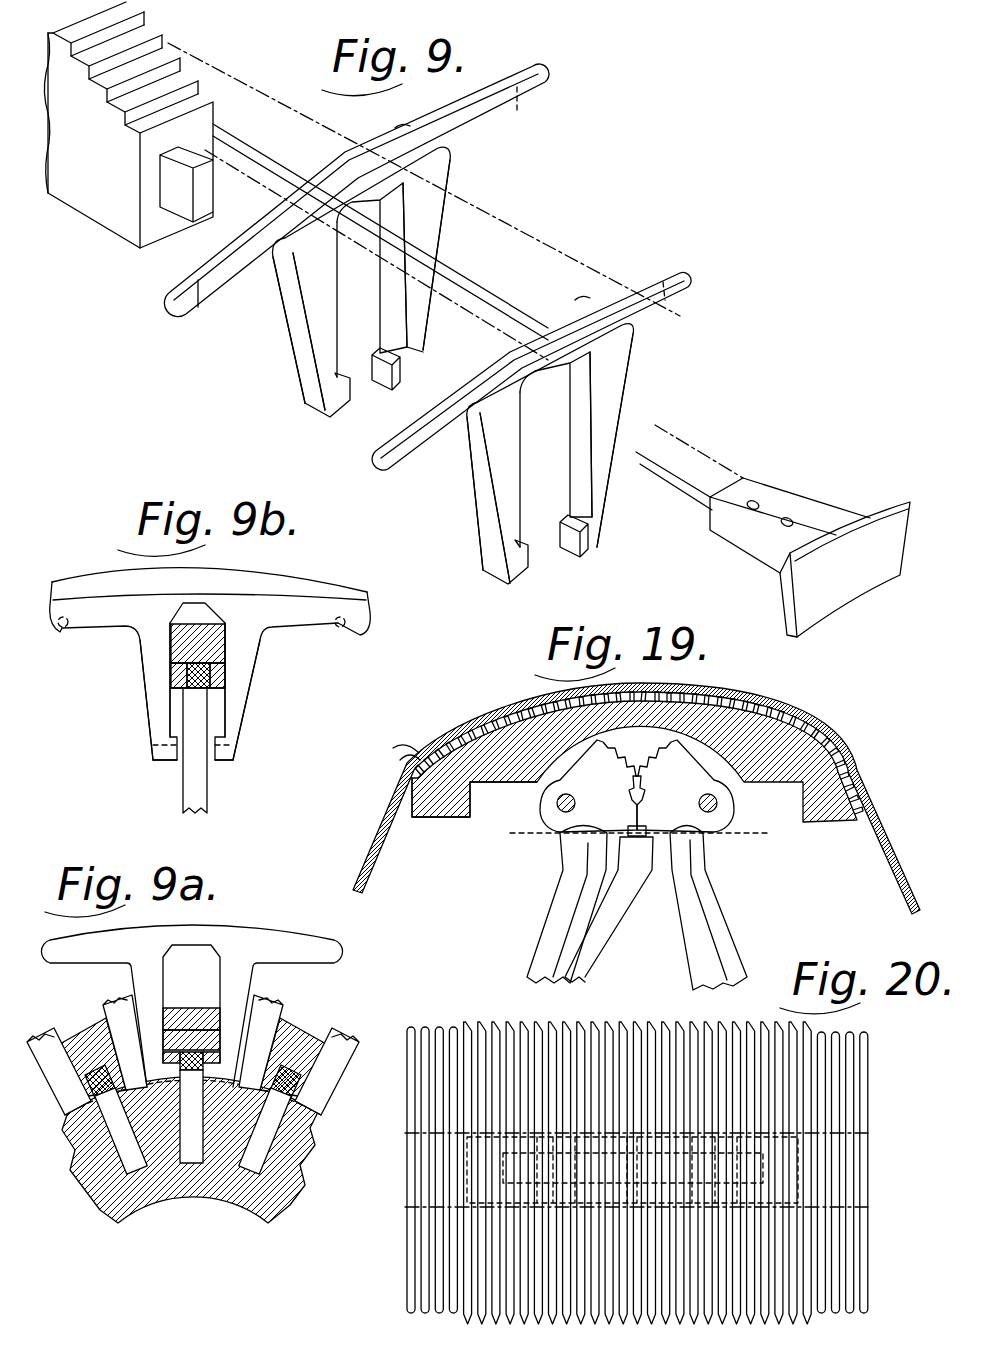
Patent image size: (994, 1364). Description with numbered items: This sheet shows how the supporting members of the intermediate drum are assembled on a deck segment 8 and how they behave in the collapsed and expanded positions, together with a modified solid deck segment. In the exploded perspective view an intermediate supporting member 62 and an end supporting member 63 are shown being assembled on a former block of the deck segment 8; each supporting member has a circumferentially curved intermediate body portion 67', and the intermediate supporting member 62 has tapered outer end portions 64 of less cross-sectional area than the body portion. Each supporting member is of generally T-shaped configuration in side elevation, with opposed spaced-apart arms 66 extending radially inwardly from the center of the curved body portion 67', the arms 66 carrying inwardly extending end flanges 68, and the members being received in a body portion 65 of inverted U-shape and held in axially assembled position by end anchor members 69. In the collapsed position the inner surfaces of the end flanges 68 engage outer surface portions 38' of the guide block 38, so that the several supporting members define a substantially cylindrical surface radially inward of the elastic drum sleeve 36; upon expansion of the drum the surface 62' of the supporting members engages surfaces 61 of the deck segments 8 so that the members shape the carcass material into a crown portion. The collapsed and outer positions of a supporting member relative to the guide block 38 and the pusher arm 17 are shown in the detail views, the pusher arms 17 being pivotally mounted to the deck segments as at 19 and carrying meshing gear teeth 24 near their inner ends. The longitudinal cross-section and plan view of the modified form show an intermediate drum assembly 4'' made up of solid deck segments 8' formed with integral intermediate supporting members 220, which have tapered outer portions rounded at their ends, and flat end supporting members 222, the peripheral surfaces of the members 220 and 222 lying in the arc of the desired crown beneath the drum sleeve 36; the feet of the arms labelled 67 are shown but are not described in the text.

In FIG. 9, the deck segment 8 is at (455, 276).
In FIG. 9, the surfaces of deck segments 61 is at (150, 18).
In FIG. 9, the intermediate supporting member 62 is at (356, 190).
In FIG. 9, the surface of the supporting members 62' is at (497, 378).
In FIG. 9a, the surface of the supporting members 62' is at (191, 991).
In FIG. 9b, the surface of the supporting members 62' is at (247, 638).
In FIG. 9, the end supporting member 63 is at (668, 296).
In FIG. 9, the tapered outer end portions 64 is at (183, 312).
In FIG. 9, the body portion 65 is at (443, 237).
In FIG. 9b, the body portion 65 is at (262, 680).
In FIG. 9, the arms 66 is at (432, 282).
In FIG. 9a, the arms 66 is at (118, 1003).
In FIG. 9b, the arms 66 is at (145, 705).
In FIG. 9, the feet of legs 67 is at (441, 486).
In FIG. 9a, the feet of legs 67 is at (197, 1105).
In FIG. 9b, the feet of legs 67 is at (153, 781).
In FIG. 9, the intermediate body portion 67' is at (494, 201).
In FIG. 9, the end flanges 68 is at (370, 360).
In FIG. 9b, the end flanges 68 is at (226, 750).
In FIG. 9, the end anchor members 69 is at (785, 525).
In FIG. 9a, the end anchor members 69 is at (205, 1010).
In FIG. 9b, the end anchor members 69 is at (185, 638).
In FIG. 9a, the pusher arms 17 is at (193, 1122).
In FIG. 9b, the pusher arms 17 is at (207, 800).
In FIG. 19, the pusher arms 17 is at (575, 940).
In FIG. 9a, the guide block means 38 is at (193, 1152).
In FIG. 9a, the outer surface portions of guide block 38' is at (215, 1074).
In FIG. 9a, the solid deck segment 8' is at (236, 1122).
In FIG. 19, the solid deck segment 8' is at (474, 820).
In FIG. 20, the solid deck segment 8' is at (611, 1164).
In FIG. 19, the intermediate drum assembly 4'' is at (634, 793).
In FIG. 20, the intermediate drum assembly 4'' is at (859, 1167).
In FIG. 19, the elastic drum sleeve 36 is at (382, 802).
In FIG. 19, the pivot mounting 19 is at (558, 810).
In FIG. 19, the meshing gear teeth 24 is at (628, 792).
In FIG. 19, the intermediate supporting members 220 is at (498, 700).
In FIG. 20, the intermediate supporting members 220 is at (510, 1024).
In FIG. 19, the end supporting members 222 is at (408, 745).
In FIG. 20, the end supporting members 222 is at (439, 1026).